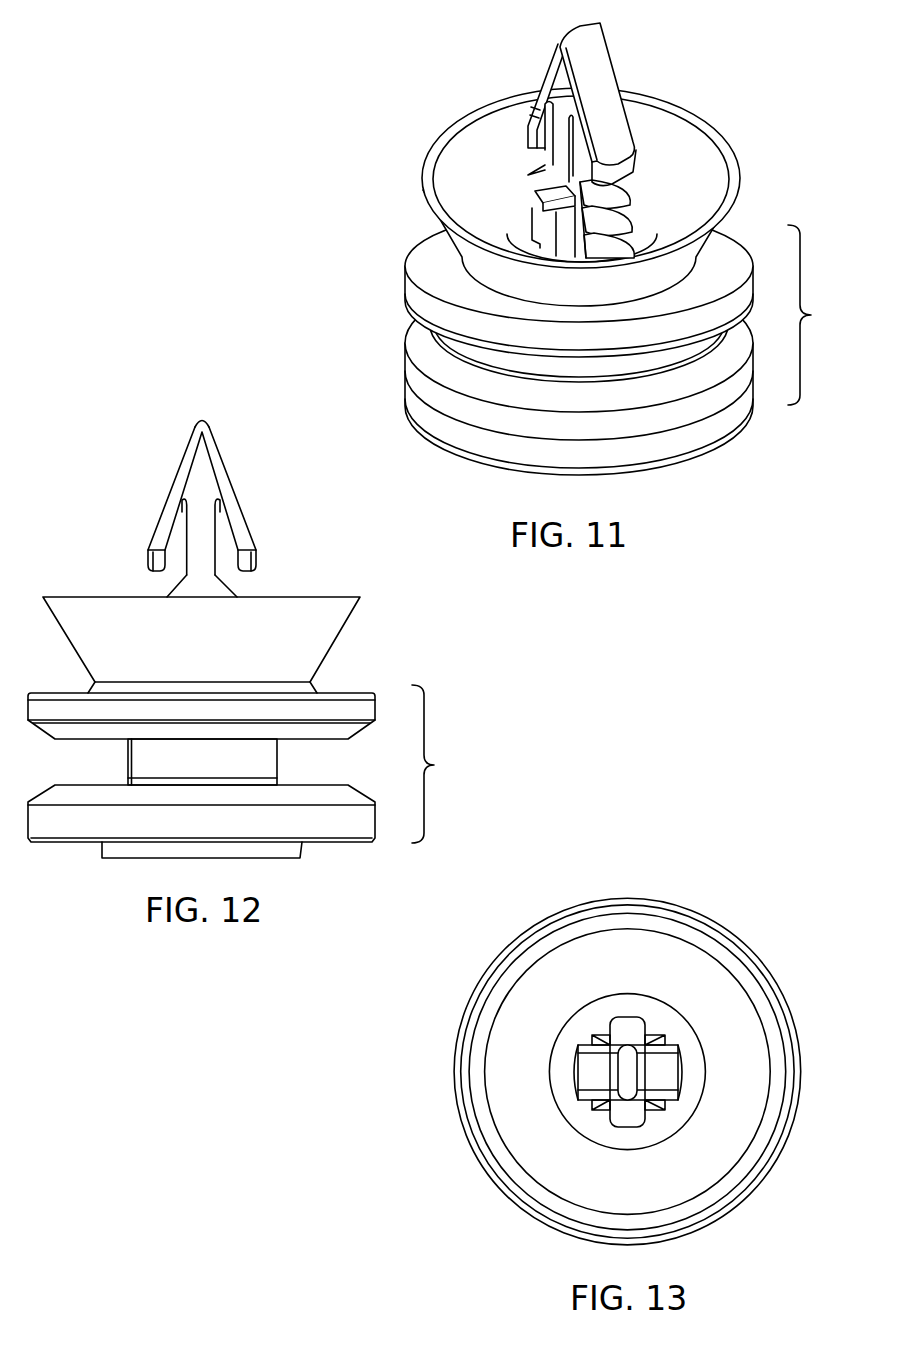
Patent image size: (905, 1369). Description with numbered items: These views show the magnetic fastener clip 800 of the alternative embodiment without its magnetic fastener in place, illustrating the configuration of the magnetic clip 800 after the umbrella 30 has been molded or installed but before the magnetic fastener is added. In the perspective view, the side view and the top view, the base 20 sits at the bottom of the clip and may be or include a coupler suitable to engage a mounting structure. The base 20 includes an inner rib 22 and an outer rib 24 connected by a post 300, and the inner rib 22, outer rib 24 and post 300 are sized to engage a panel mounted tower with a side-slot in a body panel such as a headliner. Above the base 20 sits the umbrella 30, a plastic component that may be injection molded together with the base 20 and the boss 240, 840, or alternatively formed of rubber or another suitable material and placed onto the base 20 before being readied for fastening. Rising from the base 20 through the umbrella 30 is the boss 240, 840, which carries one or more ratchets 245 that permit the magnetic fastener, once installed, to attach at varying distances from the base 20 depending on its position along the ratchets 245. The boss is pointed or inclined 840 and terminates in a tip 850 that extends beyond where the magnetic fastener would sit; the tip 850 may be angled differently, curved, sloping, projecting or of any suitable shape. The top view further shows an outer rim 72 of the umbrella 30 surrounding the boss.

In FIG. 11, the base 20 is at (815, 315).
In FIG. 12, the base 20 is at (439, 764).
In FIG. 11, the inner rib 22 is at (737, 245).
In FIG. 12, the inner rib 22 is at (365, 710).
In FIG. 11, the outer rib 24 is at (743, 385).
In FIG. 12, the outer rib 24 is at (365, 822).
In FIG. 11, the umbrella 30 is at (700, 158).
In FIG. 12, the umbrella 30 is at (328, 642).
In FIG. 13, the umbrella 30 is at (712, 978).
In FIG. 13, the outer rim 72 is at (783, 1023).
In FIG. 11, the boss 240 is at (565, 228).
In FIG. 11, the ratchets 245 is at (618, 222).
In FIG. 12, the post 300 is at (265, 763).
In FIG. 11, the magnetic fastener clip 800 is at (357, 203).
In FIG. 12, the magnetic fastener clip 800 is at (501, 686).
In FIG. 13, the magnetic fastener clip 800 is at (400, 1099).
In FIG. 11, the inclined boss 840 is at (563, 152).
In FIG. 12, the inclined boss 840 is at (203, 528).
In FIG. 13, the inclined boss 840 is at (627, 1045).
In FIG. 11, the tip 850 is at (582, 33).
In FIG. 12, the tip 850 is at (201, 422).
In FIG. 13, the tip 850 is at (632, 1080).